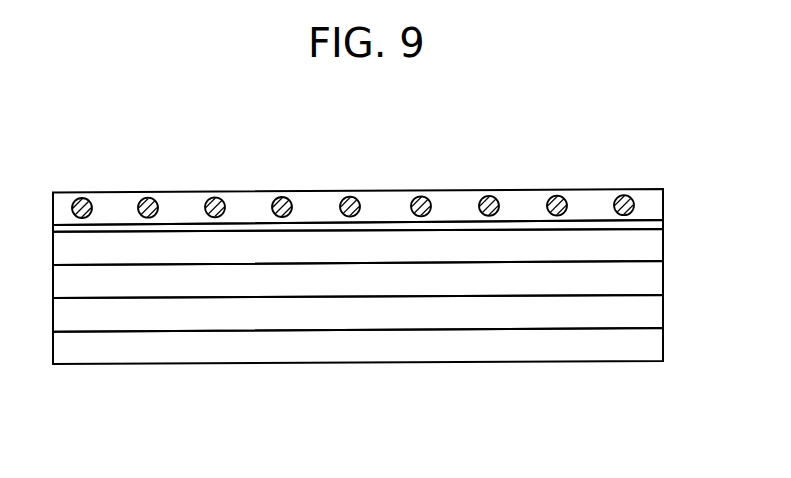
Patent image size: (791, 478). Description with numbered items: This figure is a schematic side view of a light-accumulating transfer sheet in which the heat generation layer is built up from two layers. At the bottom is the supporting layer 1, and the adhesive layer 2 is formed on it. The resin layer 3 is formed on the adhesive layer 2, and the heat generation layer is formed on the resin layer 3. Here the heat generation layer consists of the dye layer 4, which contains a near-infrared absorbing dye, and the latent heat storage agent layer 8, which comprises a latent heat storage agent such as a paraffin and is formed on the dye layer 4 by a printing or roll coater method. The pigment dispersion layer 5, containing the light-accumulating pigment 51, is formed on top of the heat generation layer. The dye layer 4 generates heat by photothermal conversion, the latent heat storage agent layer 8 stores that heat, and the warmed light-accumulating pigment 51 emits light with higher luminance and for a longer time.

The supporting layer 1 is at (652, 344).
The adhesive layer 2 is at (653, 307).
The resin layer 3 is at (650, 279).
The dye layer 4 is at (460, 227).
The pigment dispersion layer 5 is at (390, 200).
The light-accumulating pigment 51 is at (282, 202).
The latent heat storage agent layer 8 is at (587, 248).